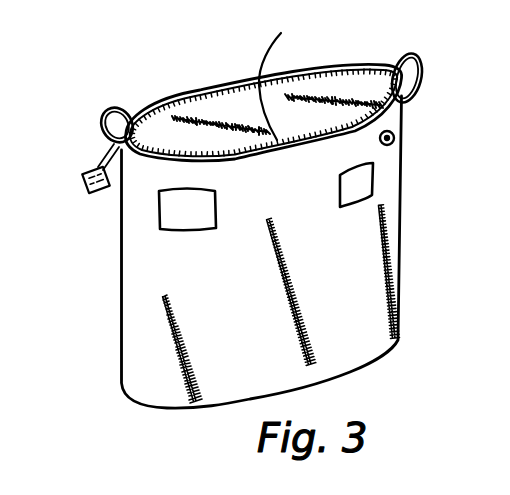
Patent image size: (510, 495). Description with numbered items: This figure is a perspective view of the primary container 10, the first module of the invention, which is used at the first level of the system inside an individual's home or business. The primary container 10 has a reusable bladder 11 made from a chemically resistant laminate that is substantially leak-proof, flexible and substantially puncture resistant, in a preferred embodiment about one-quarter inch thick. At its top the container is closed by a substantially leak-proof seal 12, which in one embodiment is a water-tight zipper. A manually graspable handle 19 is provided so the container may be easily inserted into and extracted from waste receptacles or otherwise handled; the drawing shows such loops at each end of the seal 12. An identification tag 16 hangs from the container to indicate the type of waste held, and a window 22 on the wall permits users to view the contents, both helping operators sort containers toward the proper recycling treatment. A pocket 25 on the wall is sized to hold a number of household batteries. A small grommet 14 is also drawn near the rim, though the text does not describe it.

The primary container 10 is at (112, 333).
The reusable bladder 11 is at (400, 245).
The seal 12 is at (238, 82).
The grommet 14 is at (394, 137).
The identification tag 16 is at (85, 165).
The handle 19 is at (115, 105).
The window 22 is at (373, 183).
The pocket 25 is at (159, 212).